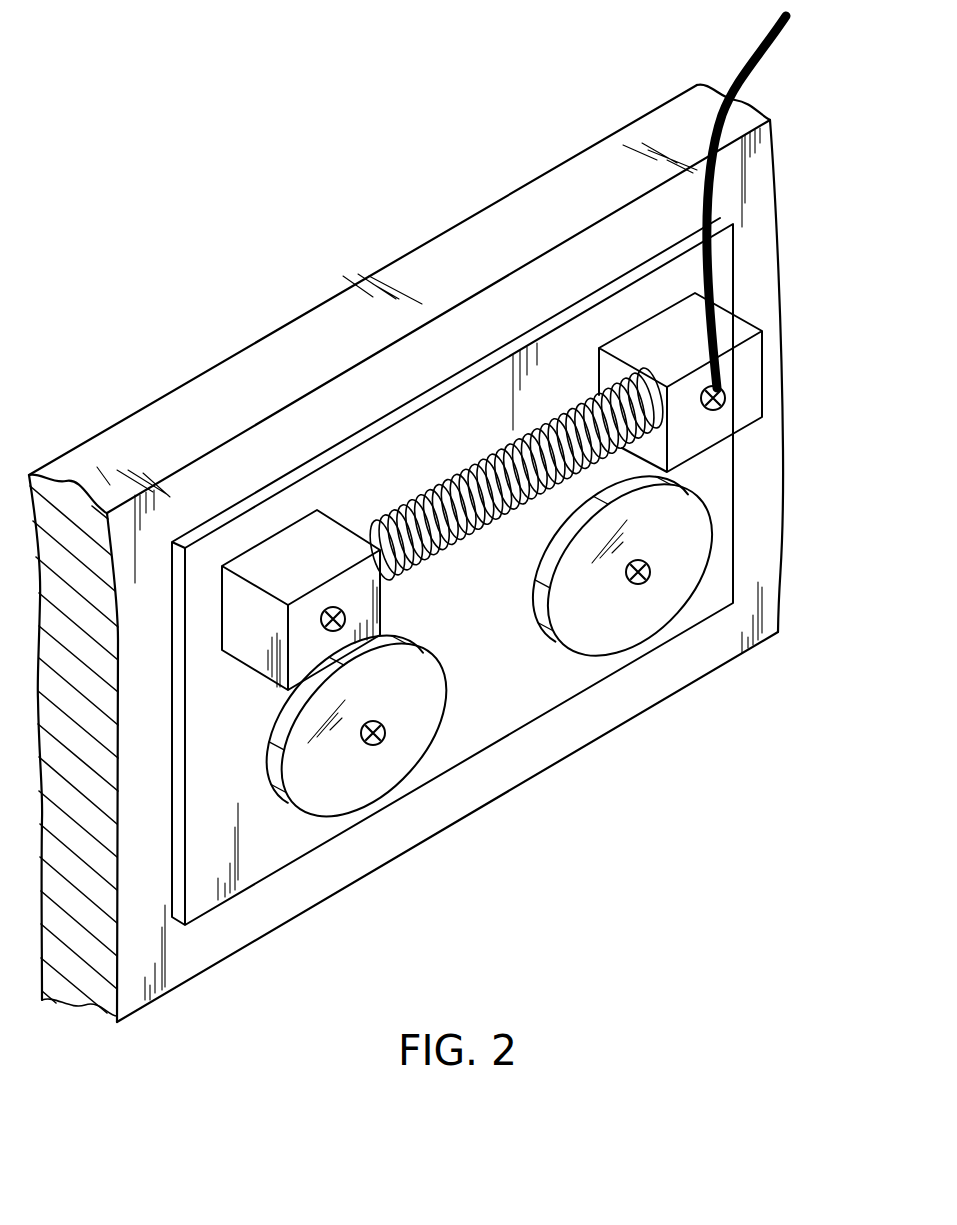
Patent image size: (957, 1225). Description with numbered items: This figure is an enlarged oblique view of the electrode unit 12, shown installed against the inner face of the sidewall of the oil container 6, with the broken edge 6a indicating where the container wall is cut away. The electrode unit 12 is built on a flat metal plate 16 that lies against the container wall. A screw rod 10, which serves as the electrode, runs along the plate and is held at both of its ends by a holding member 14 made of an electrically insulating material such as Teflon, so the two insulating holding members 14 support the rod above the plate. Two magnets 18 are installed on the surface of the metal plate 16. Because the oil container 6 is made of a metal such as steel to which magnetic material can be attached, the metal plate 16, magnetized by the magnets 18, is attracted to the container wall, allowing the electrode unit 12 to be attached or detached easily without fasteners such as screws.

The oil container 6 is at (488, 227).
The end face of support block 6a is at (748, 183).
The screw rod 10 is at (462, 465).
The electrode unit 12 is at (490, 485).
The holding member 14 is at (235, 628).
The metal plate 16 is at (727, 510).
The magnet 18 is at (571, 797).